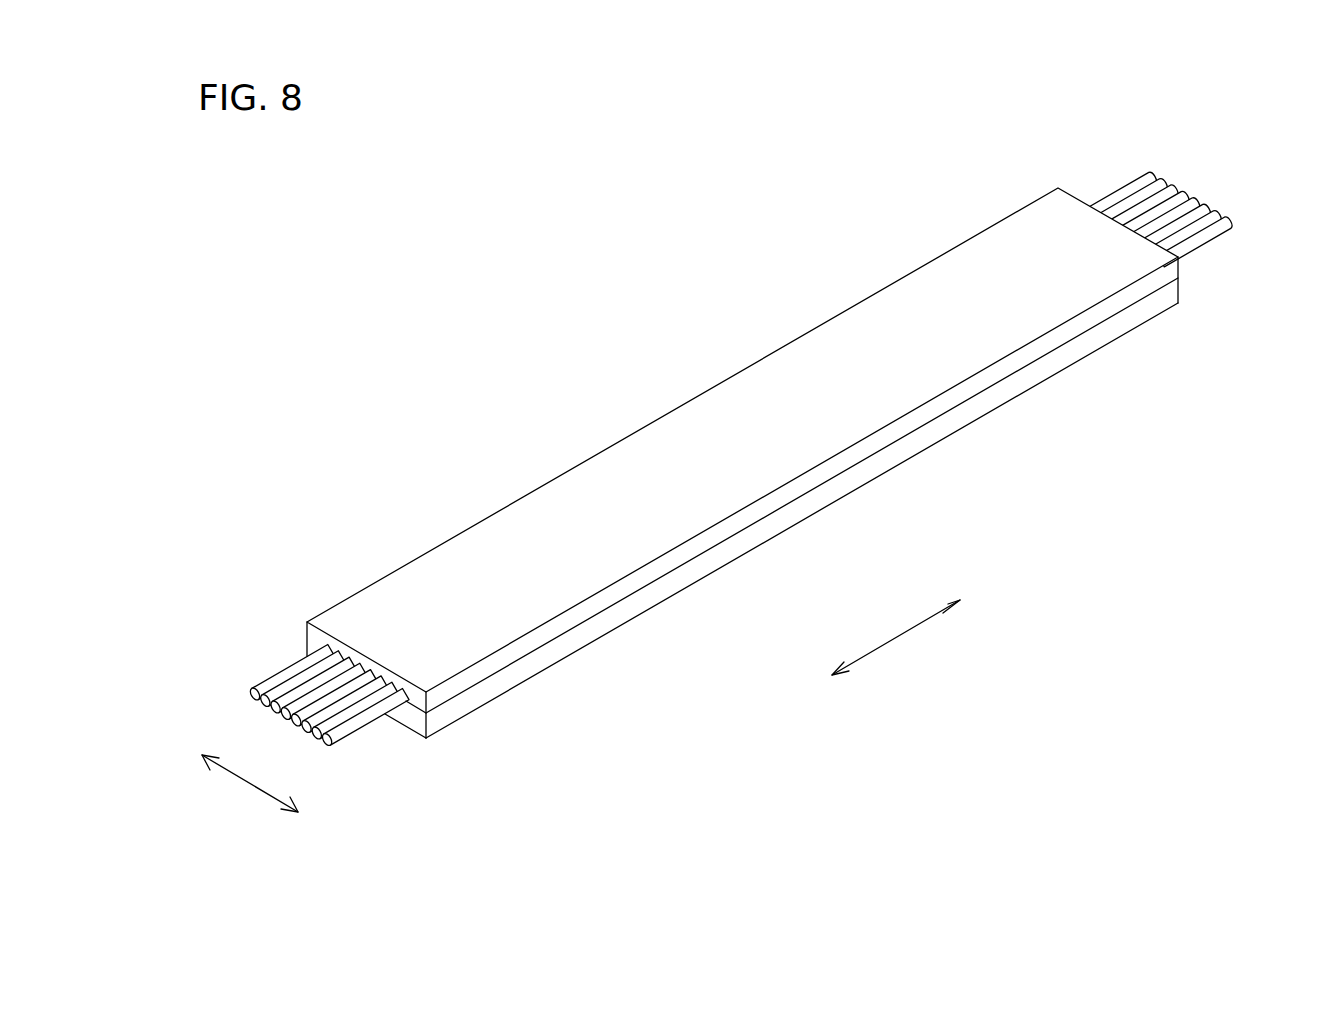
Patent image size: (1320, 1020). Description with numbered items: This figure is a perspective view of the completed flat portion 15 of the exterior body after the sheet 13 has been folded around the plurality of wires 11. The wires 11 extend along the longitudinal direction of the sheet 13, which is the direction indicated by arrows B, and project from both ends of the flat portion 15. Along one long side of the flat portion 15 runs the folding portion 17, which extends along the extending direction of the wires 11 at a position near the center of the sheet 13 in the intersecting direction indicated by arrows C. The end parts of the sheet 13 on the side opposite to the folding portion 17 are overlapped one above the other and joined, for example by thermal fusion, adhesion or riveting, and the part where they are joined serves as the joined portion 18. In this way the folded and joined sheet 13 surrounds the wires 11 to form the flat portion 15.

The wires 11 is at (1227, 220).
The sheet 13 is at (726, 412).
The flat portion 15 is at (742, 463).
The folding portion 17 is at (1017, 375).
The joined portion 18 is at (307, 647).
The arrows B is at (882, 647).
The arrows C is at (243, 782).